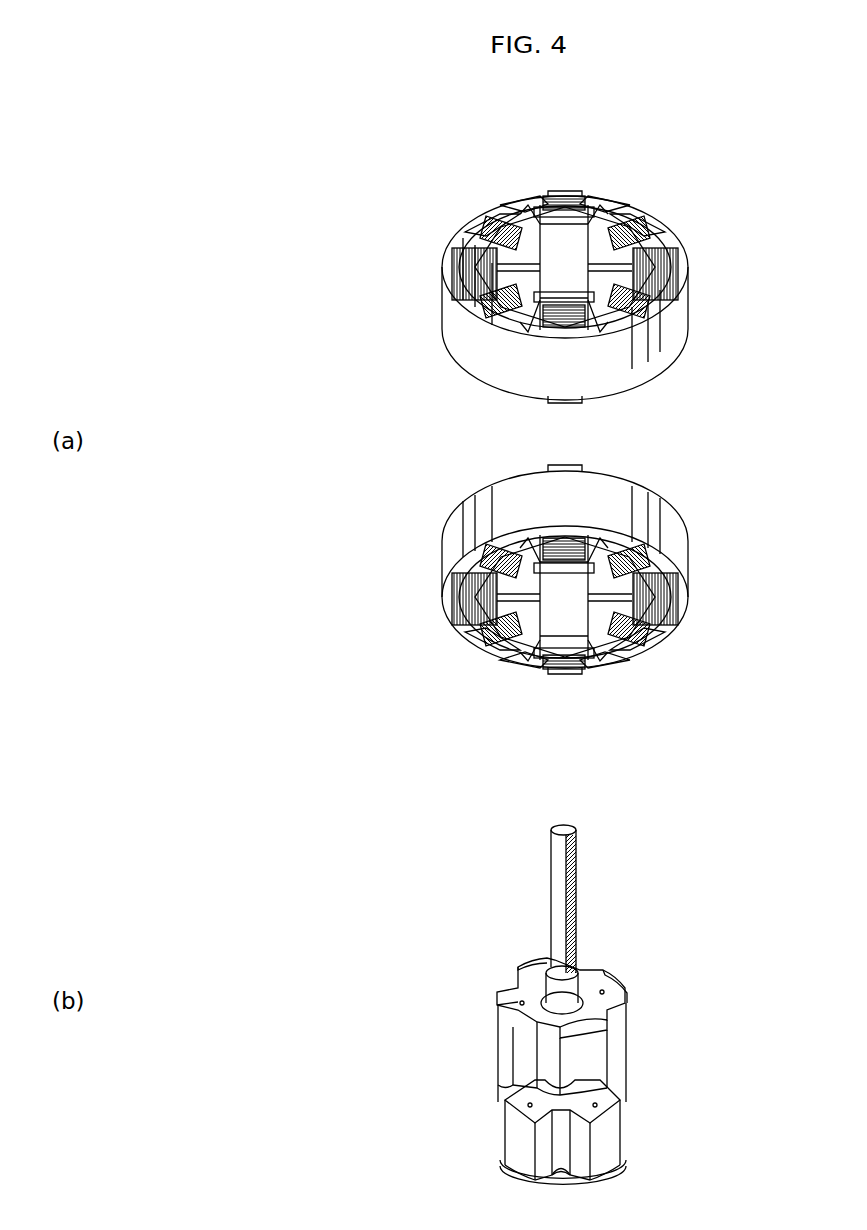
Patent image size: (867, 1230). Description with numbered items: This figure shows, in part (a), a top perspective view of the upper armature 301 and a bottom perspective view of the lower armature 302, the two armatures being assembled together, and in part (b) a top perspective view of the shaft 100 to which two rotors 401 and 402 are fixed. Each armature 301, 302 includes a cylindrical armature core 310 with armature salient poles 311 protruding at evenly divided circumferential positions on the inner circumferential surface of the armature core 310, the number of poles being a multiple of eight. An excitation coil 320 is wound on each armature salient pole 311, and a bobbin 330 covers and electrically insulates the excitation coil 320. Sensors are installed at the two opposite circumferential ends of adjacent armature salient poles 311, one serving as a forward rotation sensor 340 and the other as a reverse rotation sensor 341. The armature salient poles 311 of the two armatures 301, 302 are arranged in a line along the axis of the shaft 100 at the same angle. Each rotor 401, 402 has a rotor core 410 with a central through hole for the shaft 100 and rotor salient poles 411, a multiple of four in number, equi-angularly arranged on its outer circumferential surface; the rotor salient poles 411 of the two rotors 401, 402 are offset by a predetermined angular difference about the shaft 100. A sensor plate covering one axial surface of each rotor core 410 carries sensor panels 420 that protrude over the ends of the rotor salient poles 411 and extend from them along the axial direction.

The shaft 100 is at (550, 898).
The upper armature 301 is at (436, 319).
The lower armature 302 is at (436, 559).
The armature core 310 is at (465, 330).
The armature salient pole 311 is at (520, 214).
The excitation coil 320 is at (562, 190).
The bobbin 330 is at (540, 205).
The forward rotation sensor 340 is at (523, 207).
The reverse rotation sensor 341 is at (583, 207).
The rotor 401 is at (496, 1032).
The rotor 402 is at (496, 1128).
The rotor core 410 is at (545, 1058).
The rotor salient pole 411 is at (623, 1057).
The sensor panel 420 is at (623, 983).